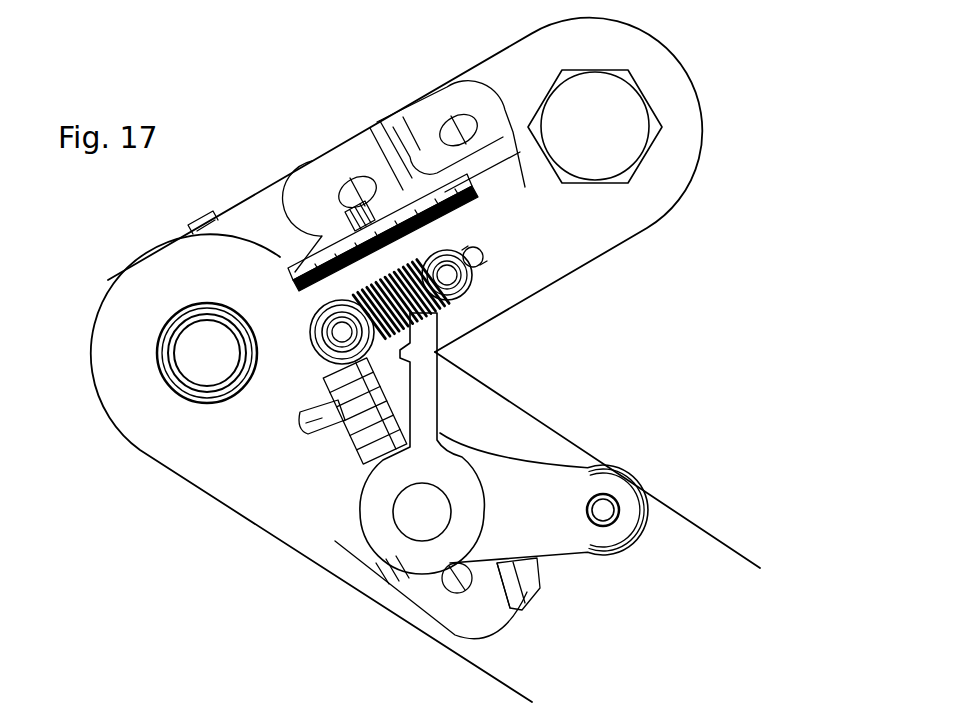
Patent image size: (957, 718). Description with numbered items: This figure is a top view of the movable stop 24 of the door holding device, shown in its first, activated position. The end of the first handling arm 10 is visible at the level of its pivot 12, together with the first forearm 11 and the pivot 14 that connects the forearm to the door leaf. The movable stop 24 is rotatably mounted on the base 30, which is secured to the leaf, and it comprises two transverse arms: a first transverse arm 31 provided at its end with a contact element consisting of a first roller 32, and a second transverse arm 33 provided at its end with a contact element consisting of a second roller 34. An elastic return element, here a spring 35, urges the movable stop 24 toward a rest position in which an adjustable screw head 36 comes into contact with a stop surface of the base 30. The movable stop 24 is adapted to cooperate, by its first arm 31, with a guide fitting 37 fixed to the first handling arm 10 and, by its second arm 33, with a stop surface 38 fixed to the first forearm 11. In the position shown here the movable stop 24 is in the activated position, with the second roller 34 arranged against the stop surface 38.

The first handling arm 10 is at (683, 547).
The first forearm 11 is at (545, 242).
The pivot 12 is at (180, 347).
The pivot 14 is at (607, 130).
The movable stop 24 is at (500, 483).
The base 30 is at (383, 537).
The first transverse arm 31 is at (587, 478).
The first roller 32 is at (626, 546).
The second transverse arm 33 is at (330, 363).
The second roller 34 is at (300, 323).
The spring 35 is at (463, 238).
The adjustable screw head 36 is at (303, 417).
The guide fitting 37 is at (540, 577).
The stop surface 38 is at (330, 262).